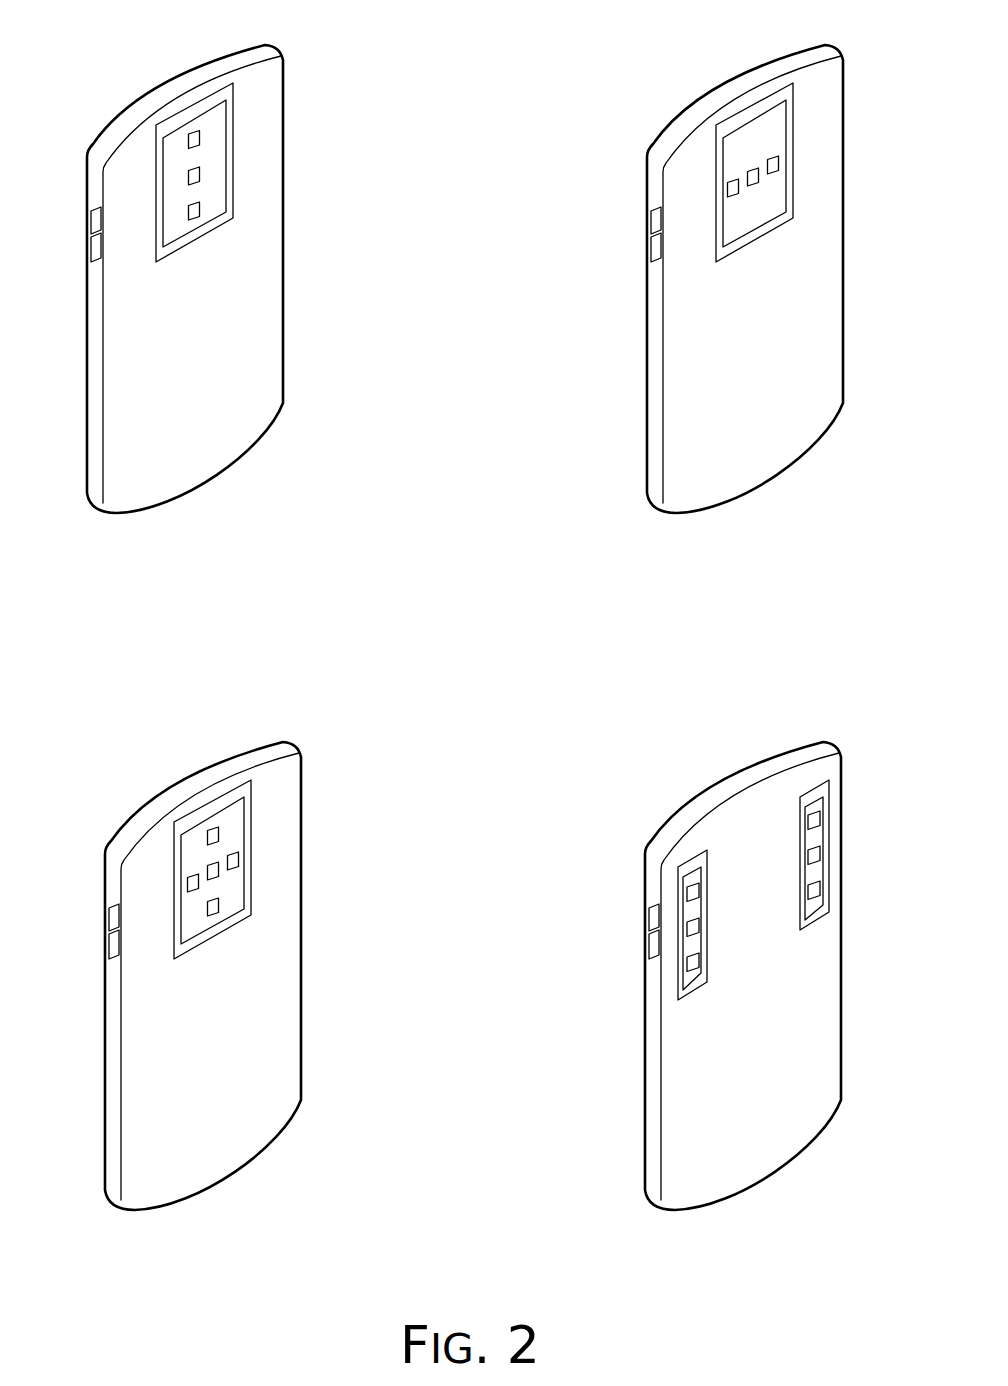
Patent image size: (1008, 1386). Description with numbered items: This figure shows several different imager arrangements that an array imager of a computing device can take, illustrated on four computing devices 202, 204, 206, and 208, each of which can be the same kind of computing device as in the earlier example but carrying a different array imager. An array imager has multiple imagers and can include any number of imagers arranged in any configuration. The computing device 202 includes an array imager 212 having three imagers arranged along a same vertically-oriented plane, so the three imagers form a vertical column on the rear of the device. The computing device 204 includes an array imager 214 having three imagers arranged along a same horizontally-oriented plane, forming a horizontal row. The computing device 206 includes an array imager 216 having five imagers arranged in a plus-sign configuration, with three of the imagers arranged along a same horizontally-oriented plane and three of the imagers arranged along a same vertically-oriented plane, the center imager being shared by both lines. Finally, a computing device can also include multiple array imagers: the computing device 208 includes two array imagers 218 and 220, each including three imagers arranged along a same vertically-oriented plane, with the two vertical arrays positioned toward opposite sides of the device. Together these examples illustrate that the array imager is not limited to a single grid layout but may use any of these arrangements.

The computing device 202 is at (262, 46).
The computing device 204 is at (777, 266).
The computing device 206 is at (235, 963).
The computing device 208 is at (775, 963).
The array imager 212 is at (170, 143).
The array imager 214 is at (685, 167).
The array imager 216 is at (143, 864).
The array imager 218 is at (624, 898).
The array imager 220 is at (746, 827).